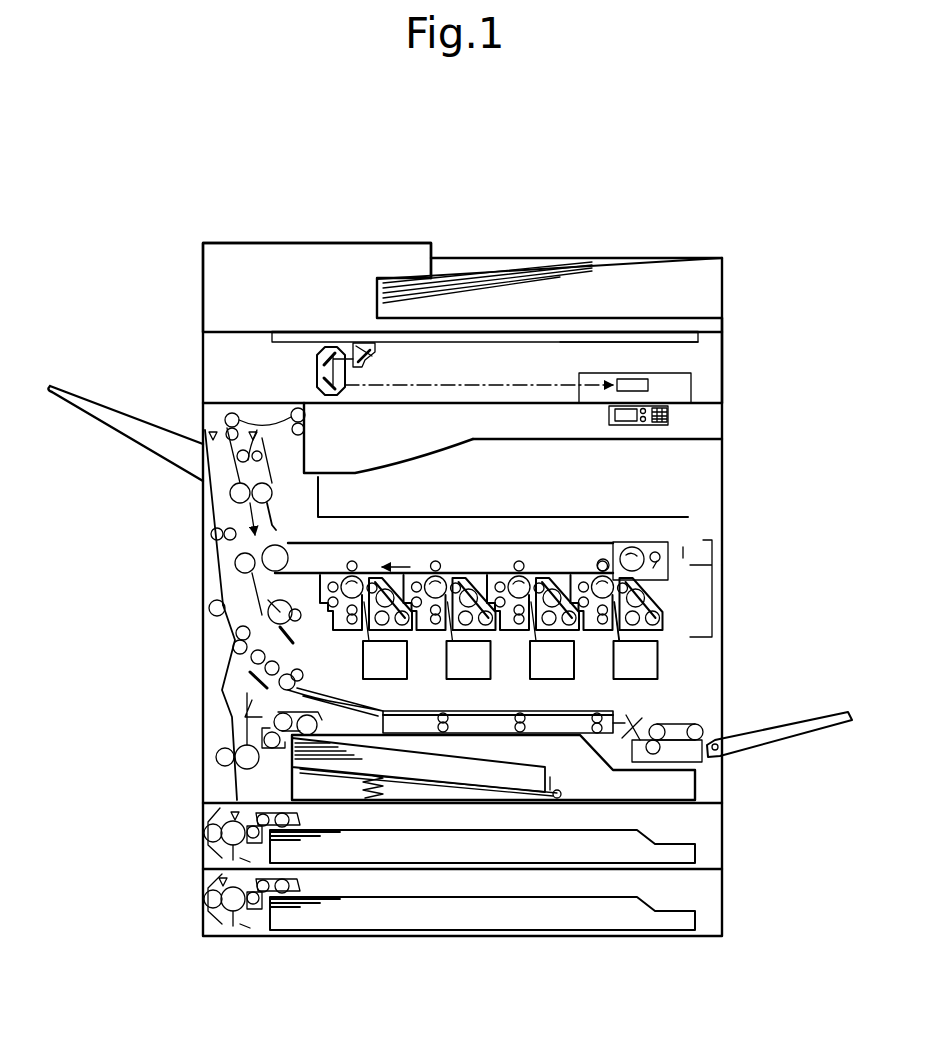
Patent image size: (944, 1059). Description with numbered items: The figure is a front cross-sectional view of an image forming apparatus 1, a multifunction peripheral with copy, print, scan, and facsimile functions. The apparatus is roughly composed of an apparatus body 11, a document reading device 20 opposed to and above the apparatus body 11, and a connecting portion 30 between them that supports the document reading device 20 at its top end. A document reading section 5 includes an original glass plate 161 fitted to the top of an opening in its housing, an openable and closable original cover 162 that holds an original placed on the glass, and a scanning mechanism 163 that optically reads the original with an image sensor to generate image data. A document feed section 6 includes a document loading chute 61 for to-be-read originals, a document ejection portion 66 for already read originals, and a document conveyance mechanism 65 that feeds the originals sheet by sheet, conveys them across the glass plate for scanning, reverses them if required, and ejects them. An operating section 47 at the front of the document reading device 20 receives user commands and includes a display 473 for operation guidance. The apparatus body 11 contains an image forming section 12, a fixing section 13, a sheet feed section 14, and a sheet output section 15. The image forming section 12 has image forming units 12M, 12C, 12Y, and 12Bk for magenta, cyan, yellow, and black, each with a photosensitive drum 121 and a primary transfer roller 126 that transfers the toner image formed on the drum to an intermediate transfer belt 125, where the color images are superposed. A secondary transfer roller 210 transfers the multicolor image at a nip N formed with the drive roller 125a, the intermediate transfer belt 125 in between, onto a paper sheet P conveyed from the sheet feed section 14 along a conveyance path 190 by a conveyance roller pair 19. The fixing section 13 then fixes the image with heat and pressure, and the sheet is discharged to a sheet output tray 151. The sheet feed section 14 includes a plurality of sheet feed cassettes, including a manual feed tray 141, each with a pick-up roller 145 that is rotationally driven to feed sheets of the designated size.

The image forming apparatus 1 is at (795, 312).
The document reading section 5 is at (182, 358).
The document feed section 6 is at (578, 243).
The apparatus body 11 is at (726, 507).
The image forming section 12 is at (682, 576).
The image forming unit for black 12Bk is at (362, 567).
The image forming unit for yellow 12Y is at (435, 559).
The image forming unit for cyan 12C is at (526, 559).
The image forming unit for magenta 12M is at (605, 549).
The fixing section 13 is at (220, 494).
The sheet feed section 14 is at (705, 828).
The sheet output section 15 is at (390, 456).
The conveyance roller pair 19 is at (268, 613).
The document reading device 20 is at (724, 352).
The connecting portion 30 is at (188, 412).
The operating section 47 is at (668, 413).
The document loading chute 61 is at (632, 284).
The document conveyance mechanism 65 is at (272, 308).
The document ejection portion 66 is at (640, 318).
The photosensitive drum 121 is at (614, 640).
The intermediate transfer belt 125 is at (608, 548).
The drive roller 125a is at (276, 553).
The primary transfer roller 126 is at (602, 559).
The manual feed tray 141 is at (808, 720).
The pick-up roller 145 is at (282, 882).
The sheet output tray 151 is at (357, 472).
The original glass plate 161 is at (595, 340).
The original cover 162 is at (535, 328).
The scanning mechanism 163 is at (308, 372).
The conveyance path 190 is at (240, 549).
The secondary transfer roller 210 is at (237, 572).
The display 473 is at (608, 415).
The nip N is at (228, 523).
The paper sheet P is at (536, 755).